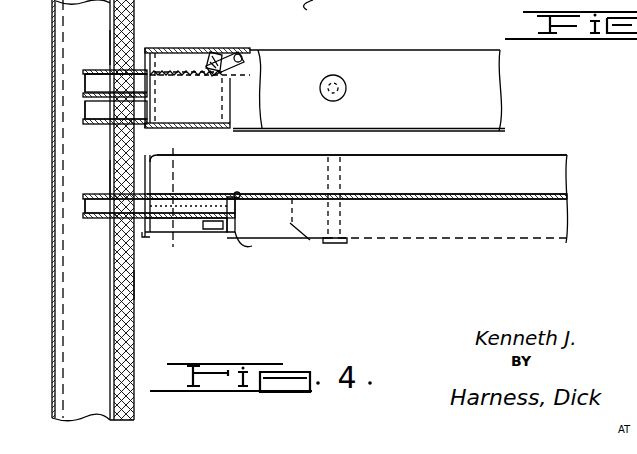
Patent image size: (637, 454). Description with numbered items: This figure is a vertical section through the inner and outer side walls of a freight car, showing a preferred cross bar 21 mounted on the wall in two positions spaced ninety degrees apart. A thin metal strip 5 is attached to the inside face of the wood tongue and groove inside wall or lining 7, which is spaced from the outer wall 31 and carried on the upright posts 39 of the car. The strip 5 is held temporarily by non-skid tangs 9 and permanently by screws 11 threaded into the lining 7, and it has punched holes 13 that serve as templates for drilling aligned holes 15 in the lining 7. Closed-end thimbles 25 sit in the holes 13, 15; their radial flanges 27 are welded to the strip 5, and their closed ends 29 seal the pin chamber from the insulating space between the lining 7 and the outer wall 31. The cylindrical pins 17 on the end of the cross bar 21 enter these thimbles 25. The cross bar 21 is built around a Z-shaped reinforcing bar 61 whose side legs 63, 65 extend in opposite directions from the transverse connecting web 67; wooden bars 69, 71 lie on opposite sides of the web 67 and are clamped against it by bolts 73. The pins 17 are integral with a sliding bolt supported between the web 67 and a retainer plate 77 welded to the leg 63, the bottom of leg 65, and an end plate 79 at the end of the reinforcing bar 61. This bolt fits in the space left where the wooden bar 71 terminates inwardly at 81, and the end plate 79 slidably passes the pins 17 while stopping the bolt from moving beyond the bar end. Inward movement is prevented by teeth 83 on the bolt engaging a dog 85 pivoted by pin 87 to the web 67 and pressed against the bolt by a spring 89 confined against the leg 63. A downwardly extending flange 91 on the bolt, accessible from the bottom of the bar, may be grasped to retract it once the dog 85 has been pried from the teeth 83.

The thin metal strip 5 is at (140, 278).
The inside wall or lining 7 is at (122, 337).
The non-skid tang 9 is at (160, 146).
The screw 11 is at (140, 136).
The hole 13 is at (137, 83).
The hole 15 is at (141, 63).
The cylindrical pin 17 is at (97, 76).
The cross bar 21 is at (377, 46).
The sleeve or thimble 25 is at (103, 66).
The radial flange 27 is at (143, 255).
The closed end 29 is at (83, 83).
The outer wall 31 is at (53, 312).
The upright post 39 is at (93, 312).
The Z-shaped metal reinforcing bar 61 is at (540, 195).
The side leg 63 is at (181, 50).
The side leg 65 is at (502, 132).
The transverse connecting web 67 is at (248, 87).
The wooden bar 69 is at (480, 86).
The wooden bar 71 is at (557, 220).
The bolt 73 is at (347, 84).
The retainer plate 77 is at (219, 127).
The end plate 79 is at (186, 50).
The termination of wooden bar 81 is at (300, 241).
The teeth 83 is at (178, 80).
The dog 85 is at (238, 56).
The pin 87 is at (250, 50).
The spring 89 is at (213, 53).
The downwardly extending flange 91 is at (240, 242).